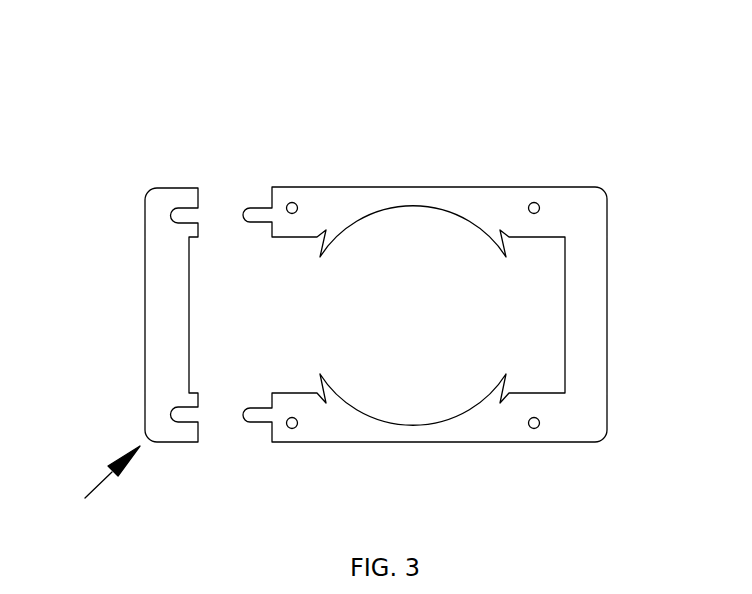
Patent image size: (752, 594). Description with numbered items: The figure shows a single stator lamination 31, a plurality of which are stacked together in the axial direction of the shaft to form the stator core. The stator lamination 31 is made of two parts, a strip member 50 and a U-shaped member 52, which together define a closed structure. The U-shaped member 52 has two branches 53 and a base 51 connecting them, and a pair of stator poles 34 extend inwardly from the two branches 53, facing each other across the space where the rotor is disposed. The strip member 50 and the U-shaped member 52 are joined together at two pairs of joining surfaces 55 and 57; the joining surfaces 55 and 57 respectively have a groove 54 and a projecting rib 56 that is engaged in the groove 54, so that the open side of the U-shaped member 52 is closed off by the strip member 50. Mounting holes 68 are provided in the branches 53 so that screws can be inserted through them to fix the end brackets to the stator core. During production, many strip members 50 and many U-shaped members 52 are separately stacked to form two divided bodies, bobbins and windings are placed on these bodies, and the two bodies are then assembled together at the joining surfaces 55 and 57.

The stator lamination 31 is at (102, 481).
The stator pole 34 is at (412, 204).
The strip member 50 is at (157, 312).
The base 51 is at (592, 287).
The U-shaped member 52 is at (587, 369).
The branch 53 is at (482, 212).
The groove 54 is at (175, 208).
The joining surface 55 is at (205, 193).
The projecting rib 56 is at (250, 206).
The joining surface 57 is at (246, 224).
The mounting hole 68 is at (294, 202).